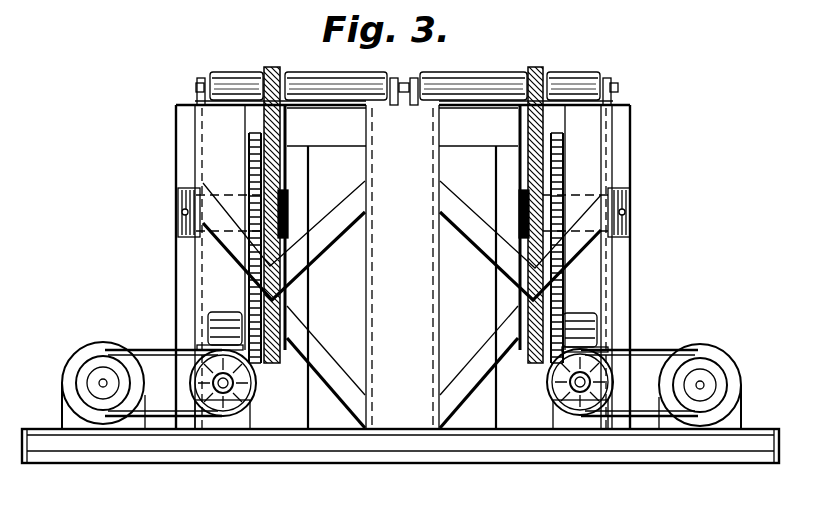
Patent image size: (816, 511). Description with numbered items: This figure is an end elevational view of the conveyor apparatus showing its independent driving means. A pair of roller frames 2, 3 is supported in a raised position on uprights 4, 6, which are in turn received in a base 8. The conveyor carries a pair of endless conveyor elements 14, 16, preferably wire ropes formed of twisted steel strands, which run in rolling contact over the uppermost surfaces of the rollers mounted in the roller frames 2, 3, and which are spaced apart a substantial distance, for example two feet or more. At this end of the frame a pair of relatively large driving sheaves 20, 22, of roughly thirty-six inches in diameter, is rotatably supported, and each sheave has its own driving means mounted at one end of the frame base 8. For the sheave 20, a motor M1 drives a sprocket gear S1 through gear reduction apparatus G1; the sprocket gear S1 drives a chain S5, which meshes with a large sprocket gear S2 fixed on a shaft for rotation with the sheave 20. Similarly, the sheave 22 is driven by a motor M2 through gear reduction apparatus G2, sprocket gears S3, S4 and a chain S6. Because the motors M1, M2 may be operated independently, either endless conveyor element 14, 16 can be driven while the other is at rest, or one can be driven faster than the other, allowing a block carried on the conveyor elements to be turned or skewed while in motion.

The roller frame 2 is at (616, 82).
The roller frame 3 is at (203, 78).
The upright 4 is at (183, 273).
The upright 6 is at (626, 253).
The base 8 is at (330, 446).
The endless conveyor element 14 is at (282, 67).
The endless conveyor element 16 is at (538, 68).
The driving sheave 20 is at (288, 75).
The driving sheave 22 is at (548, 72).
The motor M1 is at (142, 375).
The motor M2 is at (702, 348).
The gear reduction apparatus G1 is at (236, 396).
The gear reduction apparatus G2 is at (558, 398).
The sprocket gear S1 is at (235, 356).
The large sprocket gear S2 is at (250, 275).
The sprocket gear S3 is at (573, 348).
The sprocket gear S4 is at (560, 272).
The chain S5 is at (248, 158).
The chain S6 is at (564, 160).